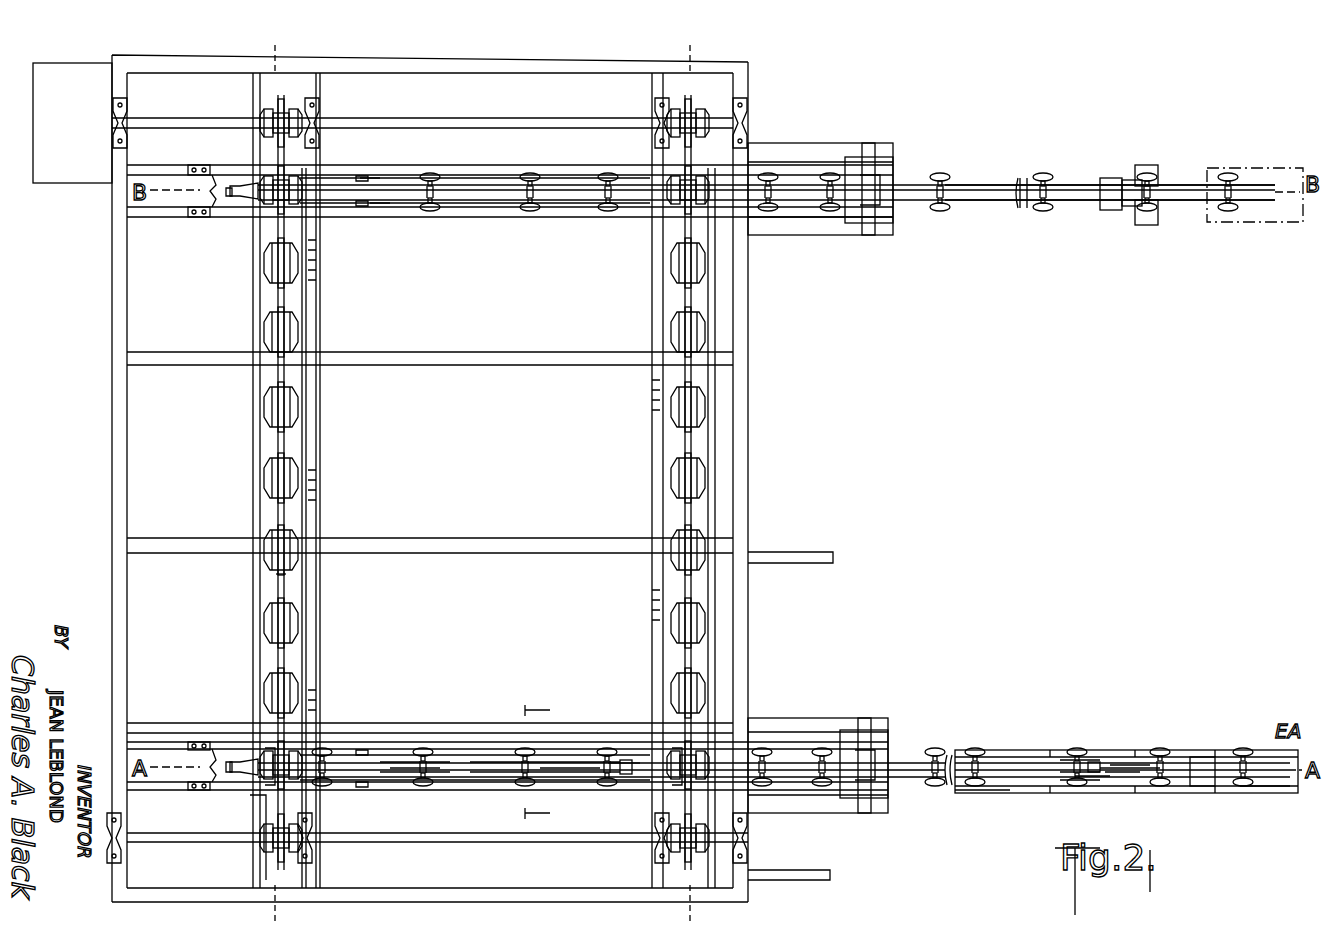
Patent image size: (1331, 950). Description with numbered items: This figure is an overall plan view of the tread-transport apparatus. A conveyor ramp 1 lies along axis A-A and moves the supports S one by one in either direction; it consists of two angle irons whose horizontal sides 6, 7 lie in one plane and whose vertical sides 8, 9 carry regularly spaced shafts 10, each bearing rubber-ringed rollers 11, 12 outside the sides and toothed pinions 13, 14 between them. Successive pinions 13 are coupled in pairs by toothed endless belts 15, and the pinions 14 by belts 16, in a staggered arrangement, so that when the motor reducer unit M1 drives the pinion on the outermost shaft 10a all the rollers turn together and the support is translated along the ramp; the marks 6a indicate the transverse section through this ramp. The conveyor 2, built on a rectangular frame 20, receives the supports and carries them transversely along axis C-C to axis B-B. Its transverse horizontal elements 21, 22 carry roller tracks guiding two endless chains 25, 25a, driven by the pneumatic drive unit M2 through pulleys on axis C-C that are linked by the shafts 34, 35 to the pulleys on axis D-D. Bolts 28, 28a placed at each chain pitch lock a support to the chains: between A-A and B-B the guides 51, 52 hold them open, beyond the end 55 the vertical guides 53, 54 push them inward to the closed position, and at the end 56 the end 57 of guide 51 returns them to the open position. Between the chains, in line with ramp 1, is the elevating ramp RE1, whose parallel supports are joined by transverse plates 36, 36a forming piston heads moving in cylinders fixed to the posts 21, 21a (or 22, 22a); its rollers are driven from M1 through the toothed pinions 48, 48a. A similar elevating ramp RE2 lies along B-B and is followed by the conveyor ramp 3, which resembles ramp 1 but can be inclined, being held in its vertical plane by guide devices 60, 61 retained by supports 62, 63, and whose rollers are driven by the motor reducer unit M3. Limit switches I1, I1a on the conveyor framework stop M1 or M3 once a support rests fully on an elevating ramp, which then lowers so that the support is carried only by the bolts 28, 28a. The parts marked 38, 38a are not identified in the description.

The conveyor ramp 1 is at (994, 808).
The conveyor 2 is at (247, 456).
The conveyor ramp 3 is at (972, 180).
The side 6 is at (1182, 752).
The section line 6a is at (554, 761).
The side 7 is at (1180, 788).
The side 8 is at (1130, 760).
The side 9 is at (1125, 780).
The shaft 10 is at (826, 748).
The outermost shaft 10a is at (766, 748).
The roller 11 is at (1072, 772).
The roller 12 is at (1086, 790).
The toothed pinion 13 is at (1097, 760).
The toothed pinion 14 is at (1072, 778).
The endless belt 15 is at (1000, 755).
The endless belt 16 is at (1113, 778).
The rectangular frame 20 is at (532, 73).
The transverse horizontal element 21 is at (417, 790).
The fixed post 21a is at (400, 740).
The transverse horizontal element 22 is at (463, 222).
The fixed post 22a is at (465, 176).
The endless chain 25 is at (275, 590).
The endless chain 25a is at (672, 595).
The bolt 28 is at (262, 755).
The bolt 28a is at (700, 752).
The shaft 34 is at (484, 118).
The shaft 35 is at (382, 842).
The transverse plate 36 is at (572, 760).
The transverse plate 36a is at (395, 752).
The rail segment 38 is at (580, 785).
The rail segment 38a is at (402, 780).
The toothed pinion 48 is at (625, 758).
The toothed pinion 48a is at (628, 777).
The guide 51 is at (320, 250).
The guide 52 is at (660, 248).
The vertical guide 53 is at (264, 106).
The vertical guide 54 is at (712, 113).
The end of guide 51 55 is at (300, 162).
The end of guide 53 56 is at (252, 792).
The end of guide 51 57 is at (298, 792).
The guide device 60 is at (1143, 180).
The guide device 61 is at (1123, 212).
The support 62 is at (1152, 165).
The support 63 is at (1148, 225).
The motor reducer unit M1 is at (890, 748).
The pneumatic drive unit M2 is at (80, 183).
The motor reducer unit M3 is at (882, 165).
The limit switch I1 is at (212, 745).
The limit switch I1a is at (215, 213).
The elevating ramp RE1 is at (475, 720).
The elevating ramp RE2 is at (444, 236).